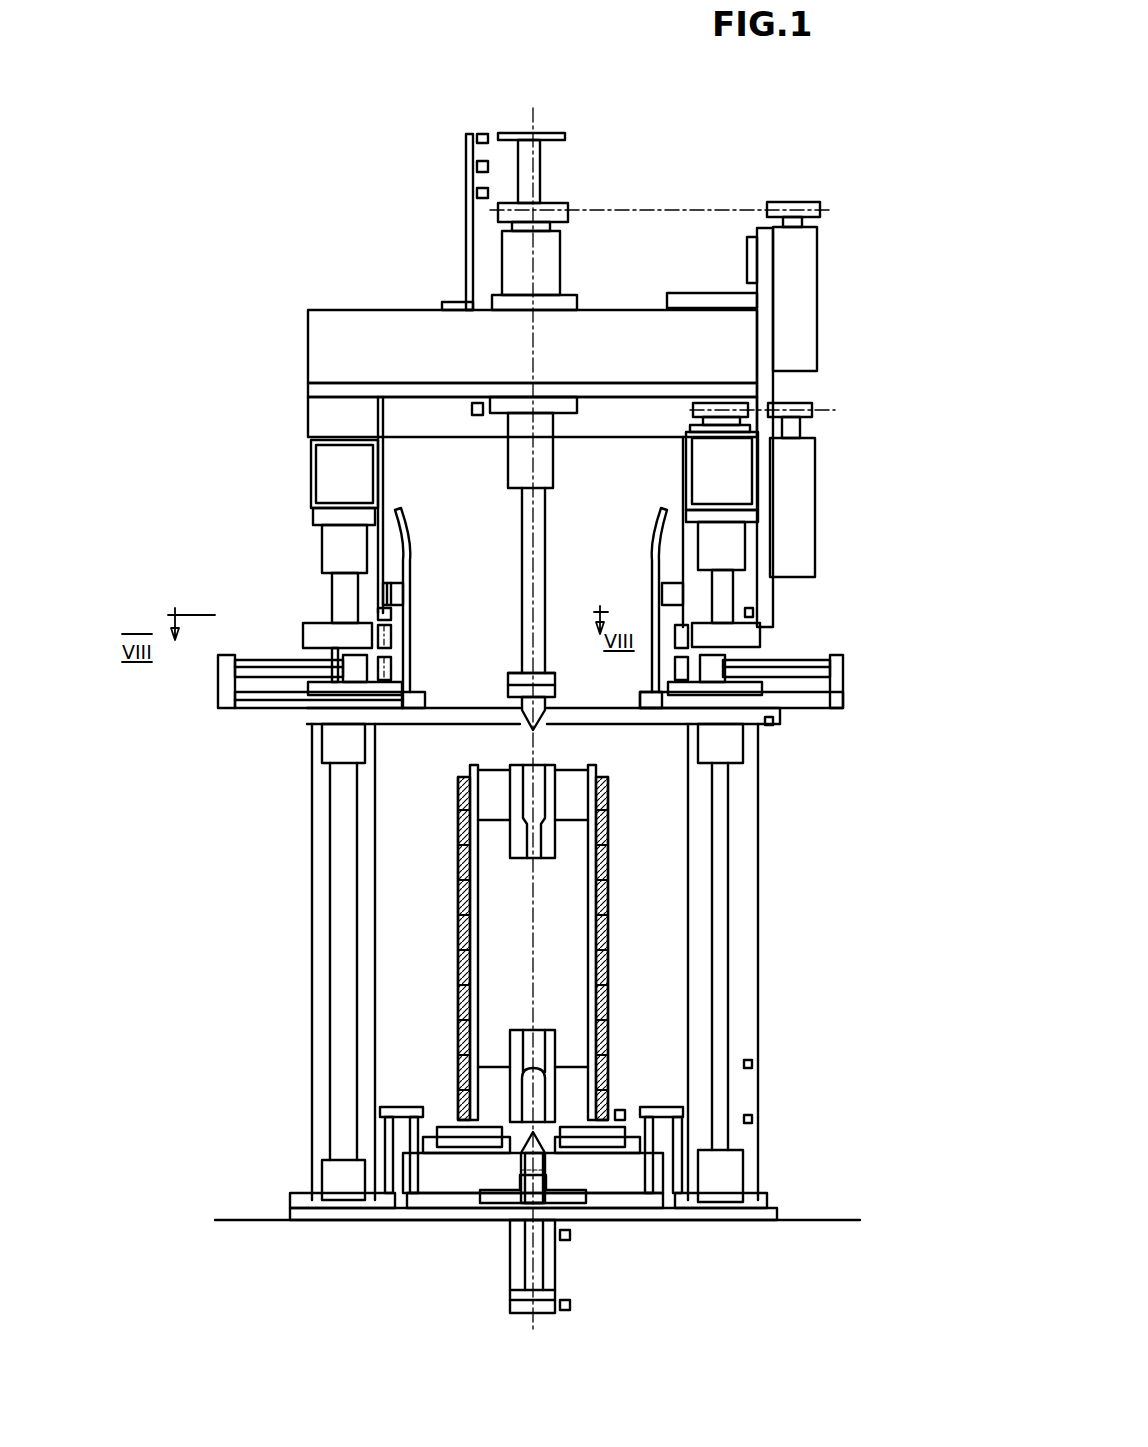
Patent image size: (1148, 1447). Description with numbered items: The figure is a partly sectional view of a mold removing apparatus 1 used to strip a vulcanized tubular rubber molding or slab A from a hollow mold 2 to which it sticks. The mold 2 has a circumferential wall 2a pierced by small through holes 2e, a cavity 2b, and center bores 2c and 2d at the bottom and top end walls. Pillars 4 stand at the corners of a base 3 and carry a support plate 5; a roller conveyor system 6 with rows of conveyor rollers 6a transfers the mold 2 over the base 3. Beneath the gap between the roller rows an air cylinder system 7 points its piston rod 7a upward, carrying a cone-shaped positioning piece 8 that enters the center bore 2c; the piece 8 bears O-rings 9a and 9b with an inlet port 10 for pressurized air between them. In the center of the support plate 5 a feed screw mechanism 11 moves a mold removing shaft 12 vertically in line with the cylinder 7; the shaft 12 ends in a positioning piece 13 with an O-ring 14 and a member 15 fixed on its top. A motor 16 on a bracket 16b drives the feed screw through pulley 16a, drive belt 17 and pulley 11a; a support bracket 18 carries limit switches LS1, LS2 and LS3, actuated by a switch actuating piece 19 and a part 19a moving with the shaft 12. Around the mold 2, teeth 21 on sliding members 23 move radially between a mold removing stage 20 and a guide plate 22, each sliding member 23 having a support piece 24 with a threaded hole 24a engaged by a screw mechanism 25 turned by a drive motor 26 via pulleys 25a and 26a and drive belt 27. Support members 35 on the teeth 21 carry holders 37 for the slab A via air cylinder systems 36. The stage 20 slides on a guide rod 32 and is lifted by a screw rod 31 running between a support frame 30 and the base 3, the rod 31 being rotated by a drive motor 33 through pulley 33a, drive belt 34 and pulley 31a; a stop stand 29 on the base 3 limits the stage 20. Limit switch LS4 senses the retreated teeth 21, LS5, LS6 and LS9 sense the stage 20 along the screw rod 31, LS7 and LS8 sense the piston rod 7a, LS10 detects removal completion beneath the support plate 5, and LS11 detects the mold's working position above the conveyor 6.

The mold removing apparatus 1 is at (838, 264).
The mold 2 is at (613, 813).
The circumferential wall 2a is at (595, 870).
The cavity 2b is at (575, 900).
The center bore 2c is at (512, 1080).
The center bore 2d is at (540, 785).
The small through holes 2e is at (495, 800).
The base 3 is at (770, 1215).
The pillars 4 is at (757, 893).
The support plate 5 is at (628, 315).
The roller conveyor system 6 is at (600, 1180).
The conveyor rollers 6a is at (445, 1165).
The air cylinder system 7 is at (512, 1270).
The piston rod 7a is at (530, 1215).
The positioning piece 8 is at (530, 1195).
The O-ring 9a is at (520, 1160).
The O-ring 9b is at (525, 1180).
The inlet port 10 is at (545, 1185).
The feed screw mechanism 11 is at (560, 245).
The pulley 11a is at (560, 203).
The mold removing shaft 12 is at (548, 556).
The positioning piece 13 is at (522, 722).
The O-ring 14 is at (492, 672).
The member 15 is at (552, 697).
The motor 16 is at (808, 302).
The pulley 16a is at (818, 202).
The bracket 16b is at (747, 265).
The drive belt 17 is at (668, 210).
The support bracket 18 is at (466, 255).
The switch actuating piece 19 is at (540, 160).
The part 19a is at (506, 133).
The mold removing stage 20 is at (612, 722).
The teeth 21 is at (418, 700).
The guide plate 22 is at (330, 688).
The sliding members 23 is at (262, 705).
The support piece 24 is at (225, 702).
The threaded hole 24a is at (218, 668).
The screw mechanism 25 is at (262, 660).
The pulley 25a is at (392, 667).
The drive motor 26 is at (318, 630).
The pulley 26a is at (391, 612).
The drive belt 27 is at (390, 642).
The stop stand 29 is at (395, 1107).
The support frame 30 is at (745, 448).
The screw rod 31 is at (725, 775).
The pulley 31a is at (708, 403).
The guide rod 32 is at (340, 935).
The drive motor 33 is at (795, 497).
The pulley 33a is at (800, 417).
The drive belt 34 is at (760, 408).
The support members 35 is at (402, 522).
The air cylinder system 36 is at (393, 583).
The holder 37 is at (655, 603).
The rubber molding A is at (600, 835).
The limit switch LS1 is at (477, 138).
The limit switch LS2 is at (477, 166).
The limit switch LS3 is at (477, 193).
The limit switch LS4 is at (773, 722).
The limit switch LS5 is at (752, 1064).
The limit switch LS6 is at (752, 1119).
The limit switch LS7 is at (565, 1240).
The limit switch LS8 is at (568, 1310).
The limit switch LS9 is at (753, 612).
The limit switch LS10 is at (472, 410).
The limit switch LS11 is at (625, 1110).